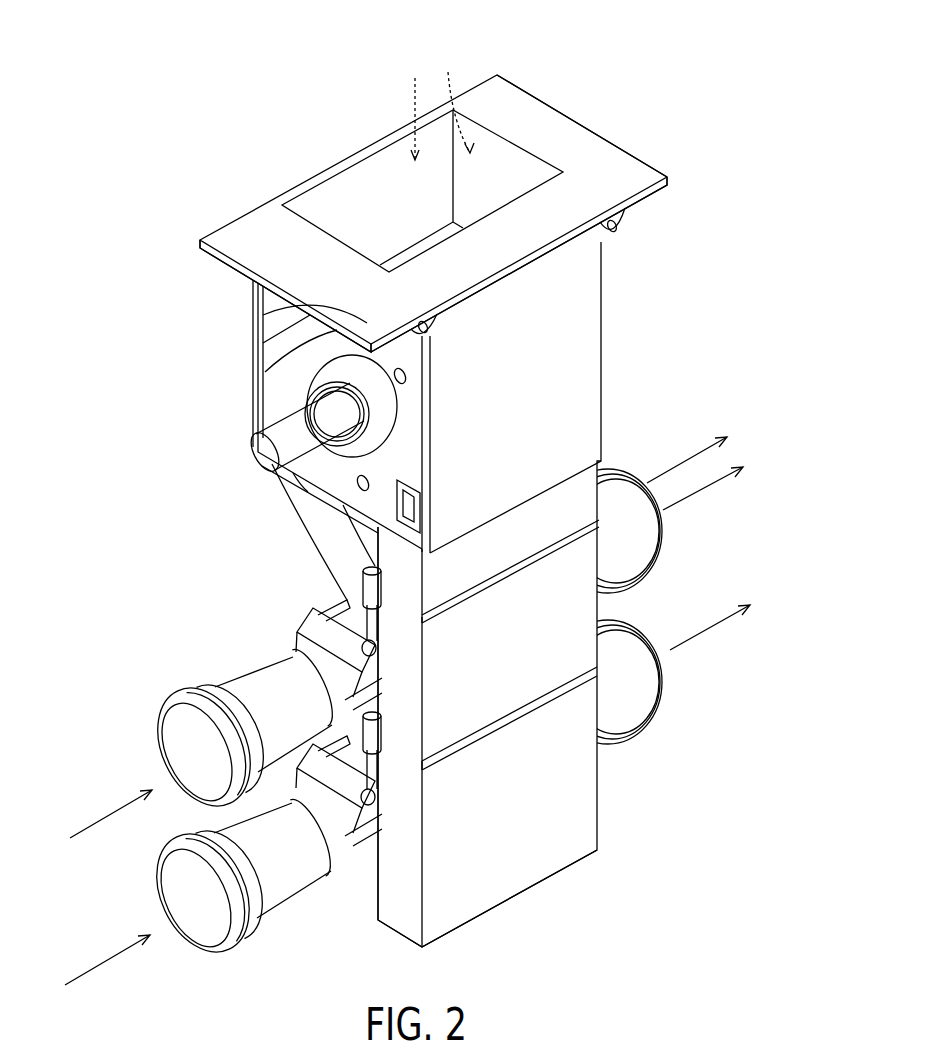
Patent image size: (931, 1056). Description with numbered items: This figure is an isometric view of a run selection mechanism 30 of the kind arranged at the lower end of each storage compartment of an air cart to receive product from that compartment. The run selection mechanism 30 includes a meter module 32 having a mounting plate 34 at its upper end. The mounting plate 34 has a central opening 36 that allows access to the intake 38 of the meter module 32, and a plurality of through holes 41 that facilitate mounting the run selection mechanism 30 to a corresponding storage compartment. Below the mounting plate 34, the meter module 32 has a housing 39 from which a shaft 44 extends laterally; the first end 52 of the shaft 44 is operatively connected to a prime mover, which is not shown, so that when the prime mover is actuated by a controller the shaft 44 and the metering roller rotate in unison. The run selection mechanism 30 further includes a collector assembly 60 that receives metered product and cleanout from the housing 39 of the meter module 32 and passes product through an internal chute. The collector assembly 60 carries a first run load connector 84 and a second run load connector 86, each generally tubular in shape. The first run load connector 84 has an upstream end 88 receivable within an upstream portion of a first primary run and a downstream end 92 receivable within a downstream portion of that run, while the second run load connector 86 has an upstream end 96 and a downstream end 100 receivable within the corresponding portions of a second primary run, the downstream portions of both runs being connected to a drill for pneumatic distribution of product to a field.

The run selection mechanism 30 is at (512, 916).
The meter module 32 is at (252, 354).
The mounting plate 34 is at (530, 128).
The central opening 36 is at (302, 187).
The intake 38 is at (442, 102).
The housing 39 is at (608, 346).
The through holes 41 is at (497, 82).
The shaft 44 is at (296, 494).
The first end 52 is at (250, 446).
The collector assembly 60 is at (603, 792).
The first run load connector 84 is at (260, 663).
The second run load connector 86 is at (293, 906).
The upstream end 88 is at (205, 688).
The downstream end 92 is at (650, 533).
The upstream end 96 is at (268, 922).
The downstream end 100 is at (648, 698).